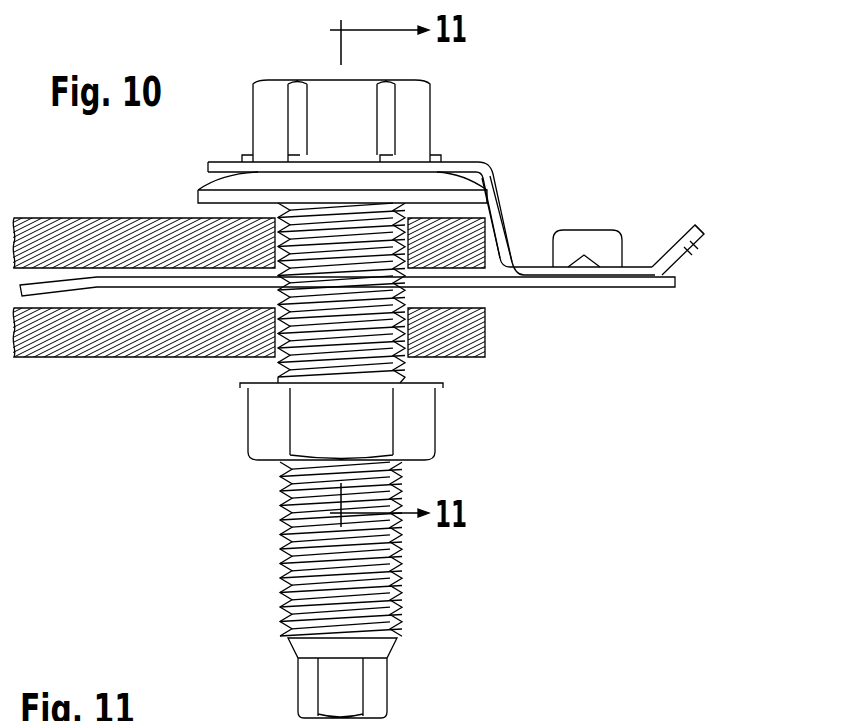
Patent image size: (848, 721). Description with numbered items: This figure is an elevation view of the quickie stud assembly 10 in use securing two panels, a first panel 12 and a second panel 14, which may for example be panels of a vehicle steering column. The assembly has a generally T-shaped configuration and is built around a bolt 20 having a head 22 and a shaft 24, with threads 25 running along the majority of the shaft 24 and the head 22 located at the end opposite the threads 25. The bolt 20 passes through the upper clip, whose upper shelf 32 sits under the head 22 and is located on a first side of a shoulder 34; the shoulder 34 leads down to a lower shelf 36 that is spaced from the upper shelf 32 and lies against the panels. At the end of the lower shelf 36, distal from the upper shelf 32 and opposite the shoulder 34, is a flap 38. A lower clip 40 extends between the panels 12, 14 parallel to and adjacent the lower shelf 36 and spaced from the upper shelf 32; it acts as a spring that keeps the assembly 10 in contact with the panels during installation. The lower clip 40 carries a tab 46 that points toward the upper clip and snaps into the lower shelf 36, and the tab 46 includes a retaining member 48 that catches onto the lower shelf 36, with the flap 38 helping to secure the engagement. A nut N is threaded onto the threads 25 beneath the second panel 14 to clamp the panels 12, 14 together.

The quickie stud assembly 10 is at (537, 77).
The first panel 12 is at (81, 217).
The second panel 14 is at (60, 357).
The bolt 20 is at (282, 485).
The head 22 is at (432, 110).
The shaft 24 is at (334, 590).
The threads 25 is at (405, 572).
The upper shelf 32 is at (467, 159).
The shoulder 34 is at (508, 222).
The lower shelf 36 is at (649, 267).
The flap 38 is at (684, 255).
The lower clip 40 is at (183, 277).
The tab 46 is at (608, 238).
The retaining member 48 is at (584, 255).
The nut N is at (434, 424).